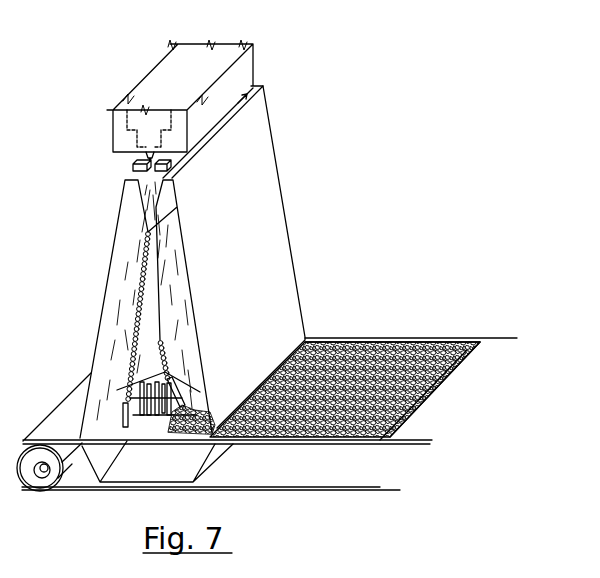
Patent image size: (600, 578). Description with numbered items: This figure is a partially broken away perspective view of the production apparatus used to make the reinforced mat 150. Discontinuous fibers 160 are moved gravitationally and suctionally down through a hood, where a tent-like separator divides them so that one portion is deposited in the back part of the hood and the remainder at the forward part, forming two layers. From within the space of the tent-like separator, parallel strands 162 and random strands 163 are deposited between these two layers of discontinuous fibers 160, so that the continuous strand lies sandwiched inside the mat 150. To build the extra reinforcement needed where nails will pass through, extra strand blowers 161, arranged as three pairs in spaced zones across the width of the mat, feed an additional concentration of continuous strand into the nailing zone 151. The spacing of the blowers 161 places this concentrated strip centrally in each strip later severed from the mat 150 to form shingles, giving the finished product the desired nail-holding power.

The mat 150 is at (405, 336).
The nailing zone 151 is at (437, 387).
The discontinuous fibers 160 is at (138, 221).
The extra strand blowers 161 is at (200, 403).
The parallel strands 162 is at (128, 430).
The random strands 163 is at (180, 412).